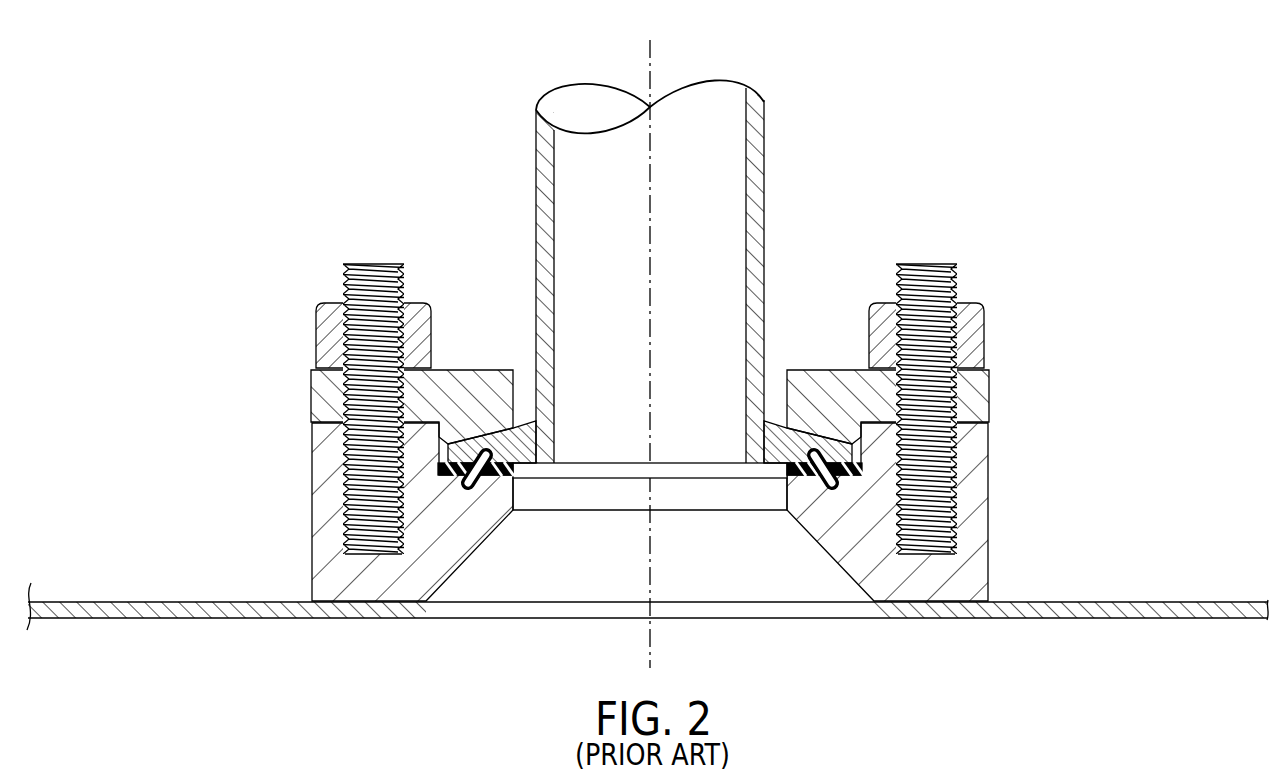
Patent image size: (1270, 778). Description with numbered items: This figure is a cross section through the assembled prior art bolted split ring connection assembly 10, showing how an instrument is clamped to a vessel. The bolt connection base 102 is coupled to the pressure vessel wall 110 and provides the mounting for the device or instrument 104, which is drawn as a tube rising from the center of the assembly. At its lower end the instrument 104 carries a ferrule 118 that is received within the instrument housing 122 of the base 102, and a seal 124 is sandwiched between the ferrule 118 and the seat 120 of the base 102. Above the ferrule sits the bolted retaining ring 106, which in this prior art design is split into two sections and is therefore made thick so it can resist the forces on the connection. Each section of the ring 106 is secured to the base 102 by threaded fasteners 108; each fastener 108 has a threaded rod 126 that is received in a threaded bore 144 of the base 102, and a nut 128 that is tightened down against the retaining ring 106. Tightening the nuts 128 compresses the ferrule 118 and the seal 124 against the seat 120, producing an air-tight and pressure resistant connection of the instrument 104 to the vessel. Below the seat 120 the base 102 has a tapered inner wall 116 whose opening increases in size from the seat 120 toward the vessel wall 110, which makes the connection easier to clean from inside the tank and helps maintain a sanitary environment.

The prior art mounting assembly 10 is at (268, 110).
The bolt connection base 102 is at (312, 498).
The device or instrument 104 is at (766, 132).
The bolted retaining ring 106 is at (320, 390).
The threaded fastener 108 is at (978, 268).
The pressure vessel wall 110 is at (1087, 620).
The tapered inner wall 116 is at (814, 541).
The ferrule 118 is at (486, 440).
The seat 120 is at (476, 482).
The instrument housing 122 is at (857, 440).
The seal 124 is at (452, 478).
The threaded rod 126 is at (372, 262).
The nut 128 is at (316, 328).
The threaded bore 144 is at (957, 495).